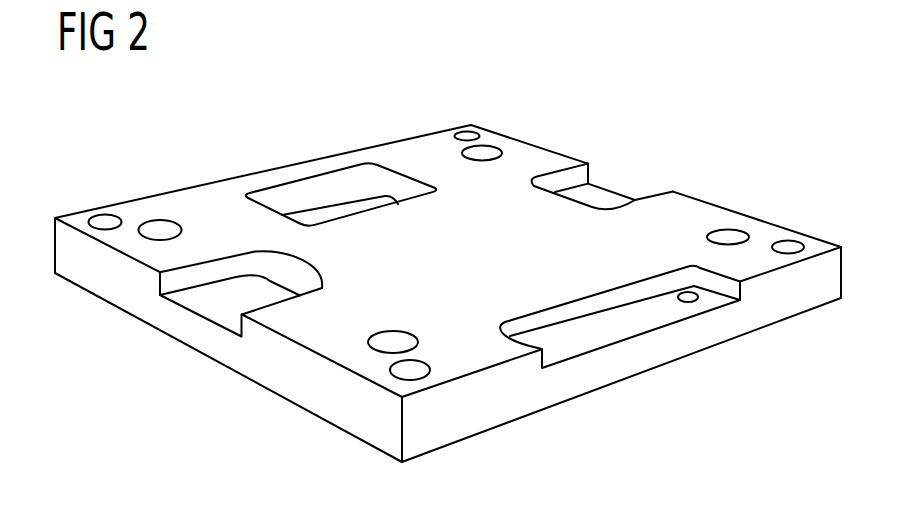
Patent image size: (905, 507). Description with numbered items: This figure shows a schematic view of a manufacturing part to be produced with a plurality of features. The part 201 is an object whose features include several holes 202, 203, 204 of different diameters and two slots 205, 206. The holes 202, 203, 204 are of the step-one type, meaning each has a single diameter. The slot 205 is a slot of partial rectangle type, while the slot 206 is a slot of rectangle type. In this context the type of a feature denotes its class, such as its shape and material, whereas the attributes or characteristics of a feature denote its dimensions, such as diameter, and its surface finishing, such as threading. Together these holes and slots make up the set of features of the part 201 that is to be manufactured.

The part 201 is at (698, 405).
The hole 202 is at (468, 137).
The hole 203 is at (689, 296).
The hole 204 is at (726, 240).
The slot 205 is at (227, 304).
The slot 206 is at (343, 207).